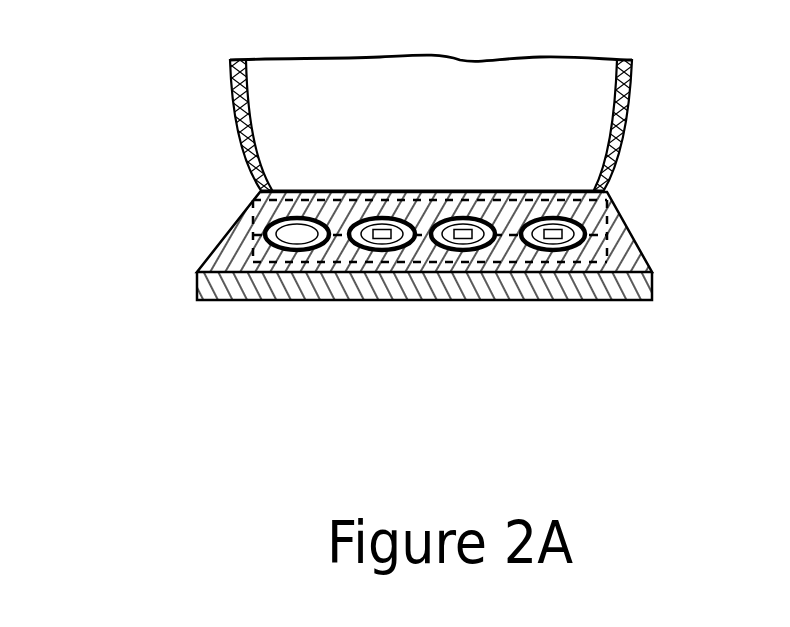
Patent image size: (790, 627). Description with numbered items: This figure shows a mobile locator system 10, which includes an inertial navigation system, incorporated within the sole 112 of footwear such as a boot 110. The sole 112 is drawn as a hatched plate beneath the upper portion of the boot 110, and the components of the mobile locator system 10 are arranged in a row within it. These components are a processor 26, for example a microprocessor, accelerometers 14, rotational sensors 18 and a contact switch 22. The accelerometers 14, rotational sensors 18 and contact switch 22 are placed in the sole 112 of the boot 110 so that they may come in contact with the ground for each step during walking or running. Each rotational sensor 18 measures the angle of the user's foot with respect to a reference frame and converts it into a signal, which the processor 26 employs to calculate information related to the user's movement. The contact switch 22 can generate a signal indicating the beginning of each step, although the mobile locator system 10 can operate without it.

The mobile locator system 10 is at (610, 213).
The accelerometers 14 is at (383, 250).
The rotational sensors 18 is at (463, 250).
The contact switch 22 is at (553, 250).
The processor 26 is at (297, 252).
The boot 110 is at (195, 107).
The sole 112 is at (207, 237).